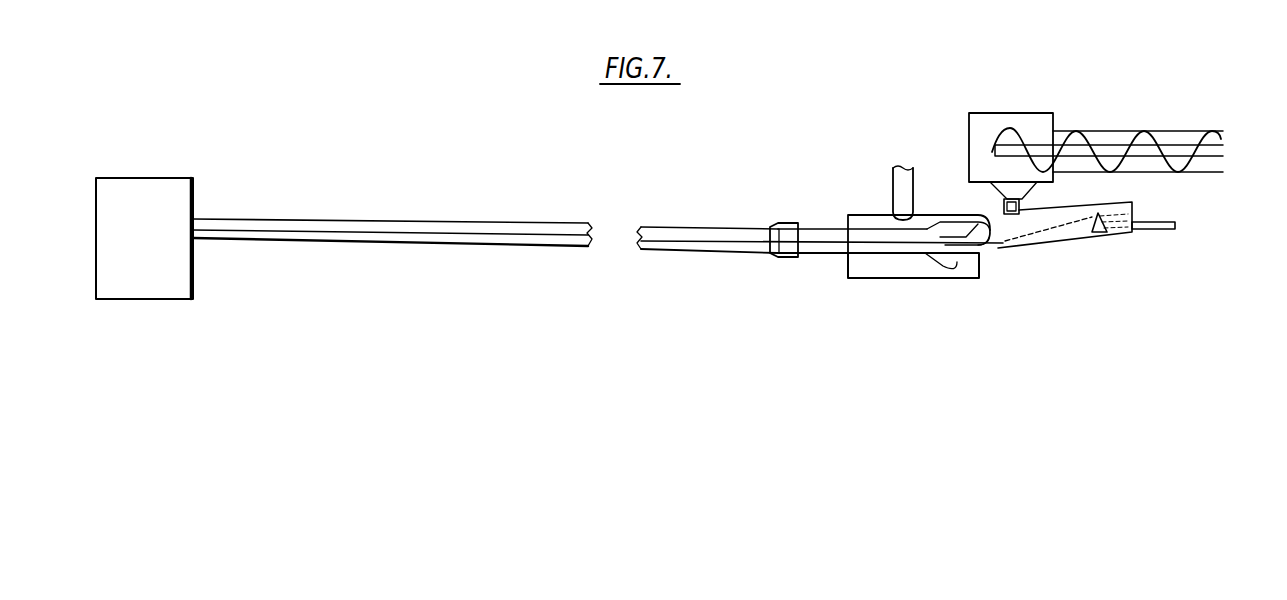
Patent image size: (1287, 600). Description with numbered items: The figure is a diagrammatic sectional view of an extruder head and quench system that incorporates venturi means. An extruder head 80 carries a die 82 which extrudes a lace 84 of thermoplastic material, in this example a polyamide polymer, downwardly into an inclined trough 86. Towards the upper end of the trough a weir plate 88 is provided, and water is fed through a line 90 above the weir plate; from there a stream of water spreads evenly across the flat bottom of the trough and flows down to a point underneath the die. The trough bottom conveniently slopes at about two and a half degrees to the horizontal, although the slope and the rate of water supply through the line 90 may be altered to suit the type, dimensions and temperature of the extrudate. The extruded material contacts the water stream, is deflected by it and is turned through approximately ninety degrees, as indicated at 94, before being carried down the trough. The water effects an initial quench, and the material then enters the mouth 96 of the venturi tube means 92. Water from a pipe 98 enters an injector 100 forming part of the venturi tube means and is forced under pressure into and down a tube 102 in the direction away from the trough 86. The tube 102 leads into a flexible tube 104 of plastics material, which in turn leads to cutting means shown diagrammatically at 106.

The extruder head 80 is at (986, 121).
The die 82 is at (1020, 209).
The lace 84 is at (319, 237).
The inclined trough 86 is at (1050, 241).
The weir plate 88 is at (1103, 233).
The line 90 is at (1172, 230).
The venturi tube means 92 is at (818, 228).
The turn of extruded material 94 is at (986, 198).
The mouth 96 is at (982, 255).
The pipe 98 is at (913, 200).
The injector 100 is at (855, 267).
The tube 102 is at (820, 254).
The flexible tube 104 is at (577, 248).
The cutting means 106 is at (135, 189).